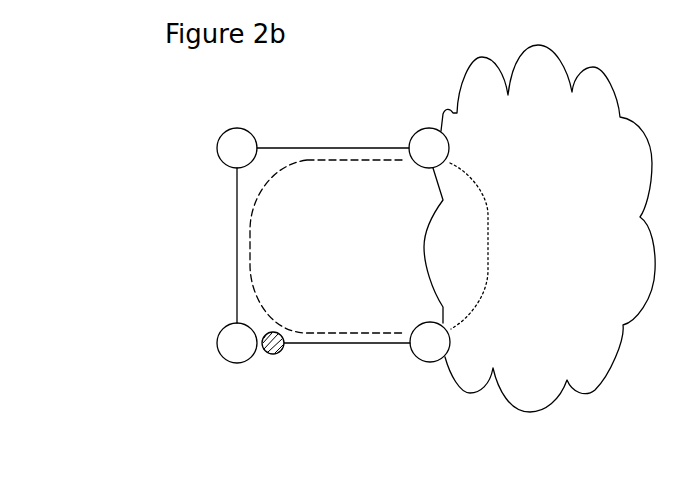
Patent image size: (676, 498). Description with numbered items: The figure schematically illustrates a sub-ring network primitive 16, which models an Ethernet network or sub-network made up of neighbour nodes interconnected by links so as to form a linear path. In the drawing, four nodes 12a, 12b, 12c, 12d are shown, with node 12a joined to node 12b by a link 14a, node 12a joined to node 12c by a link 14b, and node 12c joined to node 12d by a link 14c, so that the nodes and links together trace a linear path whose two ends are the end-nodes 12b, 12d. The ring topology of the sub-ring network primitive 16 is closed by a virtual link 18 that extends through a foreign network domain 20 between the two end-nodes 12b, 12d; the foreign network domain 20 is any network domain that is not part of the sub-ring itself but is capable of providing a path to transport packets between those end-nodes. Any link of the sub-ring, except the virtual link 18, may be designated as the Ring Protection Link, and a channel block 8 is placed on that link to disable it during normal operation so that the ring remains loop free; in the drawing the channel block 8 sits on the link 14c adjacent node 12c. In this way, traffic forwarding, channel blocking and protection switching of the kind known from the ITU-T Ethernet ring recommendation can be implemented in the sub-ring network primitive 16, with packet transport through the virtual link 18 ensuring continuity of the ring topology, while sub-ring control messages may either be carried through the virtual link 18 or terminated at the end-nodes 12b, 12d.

The sub-ring network primitive 16 is at (182, 160).
The neighbour node 12a is at (245, 127).
The end-node 12b is at (421, 129).
The neighbour node 12c is at (224, 360).
The end-node 12d is at (428, 363).
The link 14a is at (293, 146).
The link 14b is at (235, 244).
The link 14c is at (345, 346).
The channel block 8 is at (282, 353).
The virtual link 18 is at (486, 196).
The foreign network domain 20 is at (566, 276).